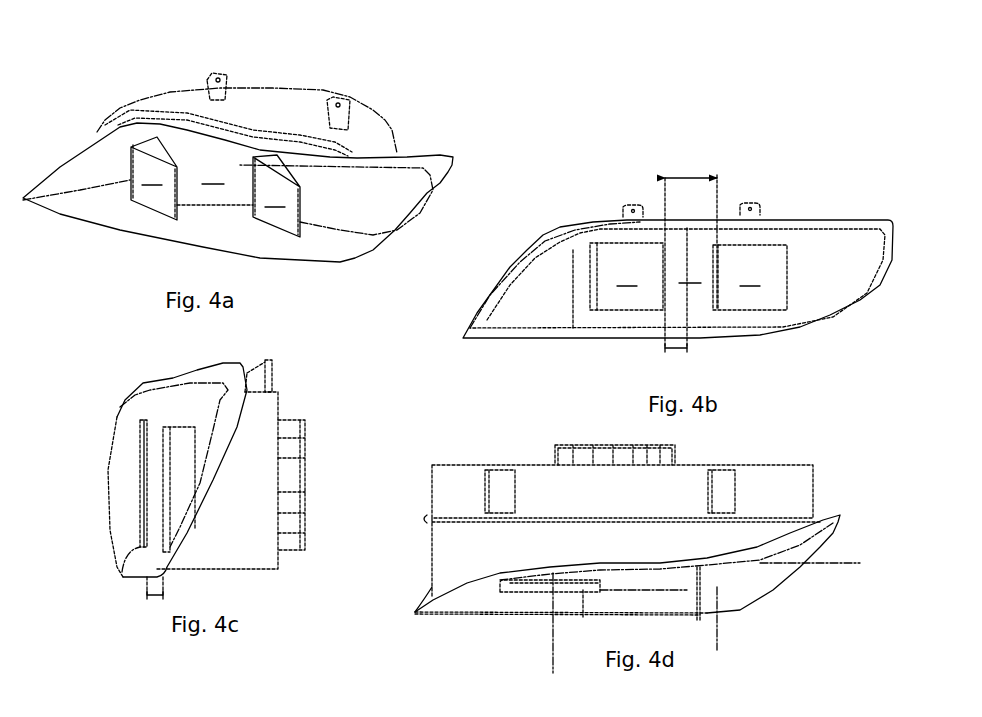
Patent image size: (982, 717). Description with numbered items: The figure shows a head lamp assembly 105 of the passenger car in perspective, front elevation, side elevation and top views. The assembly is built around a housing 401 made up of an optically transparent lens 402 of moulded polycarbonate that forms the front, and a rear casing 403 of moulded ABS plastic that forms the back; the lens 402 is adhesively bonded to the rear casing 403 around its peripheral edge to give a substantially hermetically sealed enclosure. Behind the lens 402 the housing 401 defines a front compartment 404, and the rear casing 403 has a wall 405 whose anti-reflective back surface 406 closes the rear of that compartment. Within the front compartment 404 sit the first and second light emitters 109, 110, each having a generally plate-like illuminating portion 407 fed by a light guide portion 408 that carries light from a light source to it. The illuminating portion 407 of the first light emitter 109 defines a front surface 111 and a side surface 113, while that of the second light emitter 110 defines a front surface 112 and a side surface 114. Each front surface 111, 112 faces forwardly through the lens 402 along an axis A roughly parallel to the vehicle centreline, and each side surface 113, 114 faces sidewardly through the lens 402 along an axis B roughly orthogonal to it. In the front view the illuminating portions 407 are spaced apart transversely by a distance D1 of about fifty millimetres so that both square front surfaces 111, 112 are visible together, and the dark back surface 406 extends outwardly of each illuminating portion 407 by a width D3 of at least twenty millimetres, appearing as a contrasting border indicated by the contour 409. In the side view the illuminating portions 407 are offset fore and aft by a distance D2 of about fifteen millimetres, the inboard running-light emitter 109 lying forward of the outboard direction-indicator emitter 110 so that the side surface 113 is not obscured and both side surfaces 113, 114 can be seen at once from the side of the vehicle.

In FIG. 4A, the head lamp assembly 105 is at (435, 65).
In FIG. 4A, the housing 401 is at (396, 113).
In FIG. 4C, the housing 401 is at (308, 390).
In FIG. 4D, the housing 401 is at (783, 435).
In FIG. 4A, the lens 402 is at (450, 167).
In FIG. 4B, the lens 402 is at (890, 222).
In FIG. 4C, the lens 402 is at (117, 405).
In FIG. 4D, the lens 402 is at (833, 543).
In FIG. 4A, the rear casing 403 is at (278, 108).
In FIG. 4B, the rear casing 403 is at (691, 210).
In FIG. 4C, the rear casing 403 is at (235, 545).
In FIG. 4D, the rear casing 403 is at (535, 477).
In FIG. 4A, the front compartment 404 is at (88, 192).
In FIG. 4A, the wall 405 is at (367, 207).
In FIG. 4B, the wall 405 is at (827, 283).
In FIG. 4A, the back surface 406 is at (215, 187).
In FIG. 4B, the back surface 406 is at (683, 262).
In FIG. 4A, the illuminating portion 407 is at (150, 218).
In FIG. 4B, the illuminating portion 407 is at (627, 315).
In FIG. 4A, the light guide portion 408 is at (137, 137).
In FIG. 4C, the light guide portion 408 is at (155, 415).
In FIG. 4D, the light guide portion 408 is at (497, 593).
In FIG. 4B, the contour 409 is at (573, 264).
In FIG. 4A, the first light emitter 109 is at (122, 218).
In FIG. 4B, the first light emitter 109 is at (600, 230).
In FIG. 4D, the first light emitter 109 is at (525, 628).
In FIG. 4A, the second light emitter 110 is at (318, 233).
In FIG. 4B, the second light emitter 110 is at (770, 227).
In FIG. 4D, the second light emitter 110 is at (750, 590).
In FIG. 4A, the front surface 111 is at (154, 178).
In FIG. 4B, the front surface 111 is at (626, 276).
In FIG. 4C, the front surface 111 is at (140, 467).
In FIG. 4D, the front surface 111 is at (583, 617).
In FIG. 4A, the front surface 112 is at (276, 196).
In FIG. 4B, the front surface 112 is at (750, 277).
In FIG. 4C, the front surface 112 is at (163, 487).
In FIG. 4D, the front surface 112 is at (700, 606).
In FIG. 4A, the side surface 113 is at (180, 205).
In FIG. 4C, the side surface 113 is at (145, 440).
In FIG. 4D, the side surface 113 is at (600, 592).
In FIG. 4A, the side surface 114 is at (302, 227).
In FIG. 4C, the side surface 114 is at (165, 465).
In FIG. 4D, the side surface 114 is at (763, 563).
In FIG. 4B, the transverse spacing distance D1 is at (690, 178).
In FIG. 4C, the longitudinal spacing distance D2 is at (156, 600).
In FIG. 4B, the border width D3 is at (676, 352).
In FIG. 4D, the axis A is at (555, 657).
In FIG. 4D, the axis B is at (673, 590).